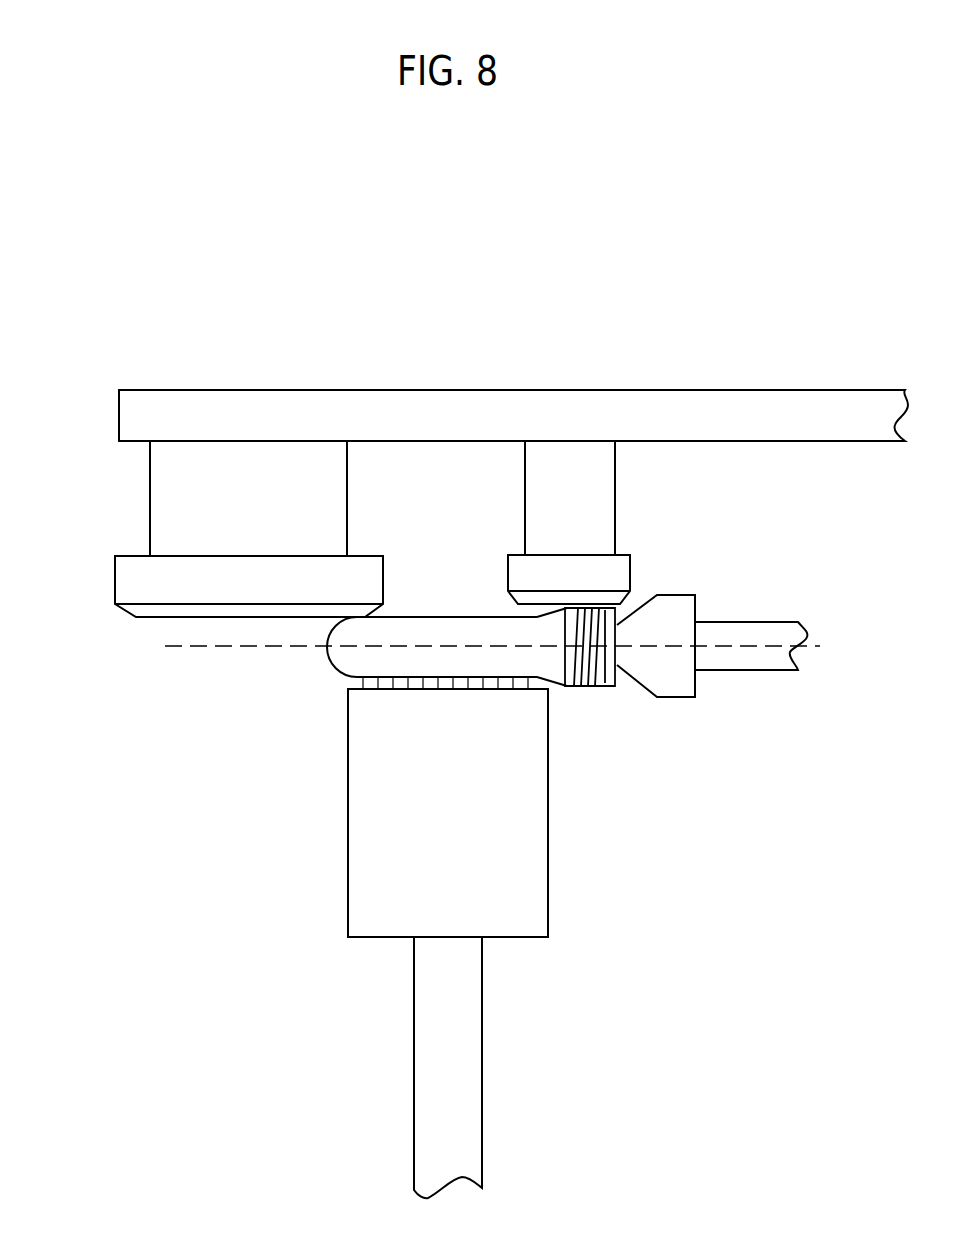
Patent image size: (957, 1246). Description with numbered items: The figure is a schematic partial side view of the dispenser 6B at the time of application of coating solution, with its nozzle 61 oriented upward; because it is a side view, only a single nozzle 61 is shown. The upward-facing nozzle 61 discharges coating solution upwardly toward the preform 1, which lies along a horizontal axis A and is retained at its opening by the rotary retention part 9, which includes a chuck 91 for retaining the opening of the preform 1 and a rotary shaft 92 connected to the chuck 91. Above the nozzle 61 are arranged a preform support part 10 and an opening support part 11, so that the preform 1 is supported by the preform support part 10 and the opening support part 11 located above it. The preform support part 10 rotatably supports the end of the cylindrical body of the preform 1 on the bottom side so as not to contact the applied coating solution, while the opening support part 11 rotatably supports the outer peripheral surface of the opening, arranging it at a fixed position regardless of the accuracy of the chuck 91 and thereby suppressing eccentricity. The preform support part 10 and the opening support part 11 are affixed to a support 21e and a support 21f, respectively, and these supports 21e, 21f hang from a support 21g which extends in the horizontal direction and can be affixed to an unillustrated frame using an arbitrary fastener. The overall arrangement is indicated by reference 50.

The preform 1 is at (455, 615).
The rotary retention part 9 is at (738, 692).
The preform support part 10 is at (113, 580).
The opening support part 11 is at (514, 553).
The support 21e is at (160, 487).
The support 21f is at (573, 480).
The support 21g is at (312, 410).
The connector unit 50 is at (272, 950).
The nozzle 61 is at (548, 870).
The dispenser 6B is at (522, 1050).
The chuck 91 is at (677, 593).
The rotary shaft 92 is at (767, 620).
The central axis A is at (222, 649).